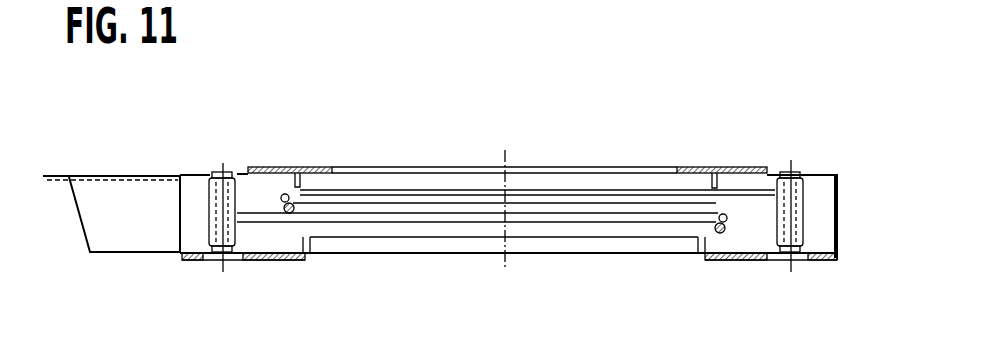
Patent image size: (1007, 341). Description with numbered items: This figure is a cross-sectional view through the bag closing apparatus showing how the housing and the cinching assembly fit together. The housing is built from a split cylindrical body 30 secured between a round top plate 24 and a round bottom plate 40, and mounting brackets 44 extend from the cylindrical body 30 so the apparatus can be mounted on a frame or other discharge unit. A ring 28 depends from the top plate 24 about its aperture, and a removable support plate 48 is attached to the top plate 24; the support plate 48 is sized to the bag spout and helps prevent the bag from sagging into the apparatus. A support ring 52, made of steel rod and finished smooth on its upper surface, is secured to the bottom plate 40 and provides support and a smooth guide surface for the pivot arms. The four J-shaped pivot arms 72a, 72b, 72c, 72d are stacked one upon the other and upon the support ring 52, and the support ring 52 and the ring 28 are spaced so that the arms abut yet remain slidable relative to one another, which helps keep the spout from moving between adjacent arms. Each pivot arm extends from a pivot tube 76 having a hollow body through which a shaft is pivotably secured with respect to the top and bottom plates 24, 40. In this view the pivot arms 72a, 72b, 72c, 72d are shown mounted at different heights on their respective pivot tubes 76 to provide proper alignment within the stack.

The top plate 24 is at (188, 173).
The ring 28 is at (700, 183).
The split cylindrical body 30 is at (840, 187).
The bottom plate 40 is at (188, 263).
The mounting bracket 44 is at (68, 175).
The support plate 48 is at (732, 168).
The support ring 52 is at (533, 243).
The pivot arm 72a is at (350, 196).
The pivot arm 72b is at (400, 207).
The pivot arm 72c is at (448, 220).
The pivot arm 72d is at (722, 234).
The pivot tube 76 is at (245, 246).